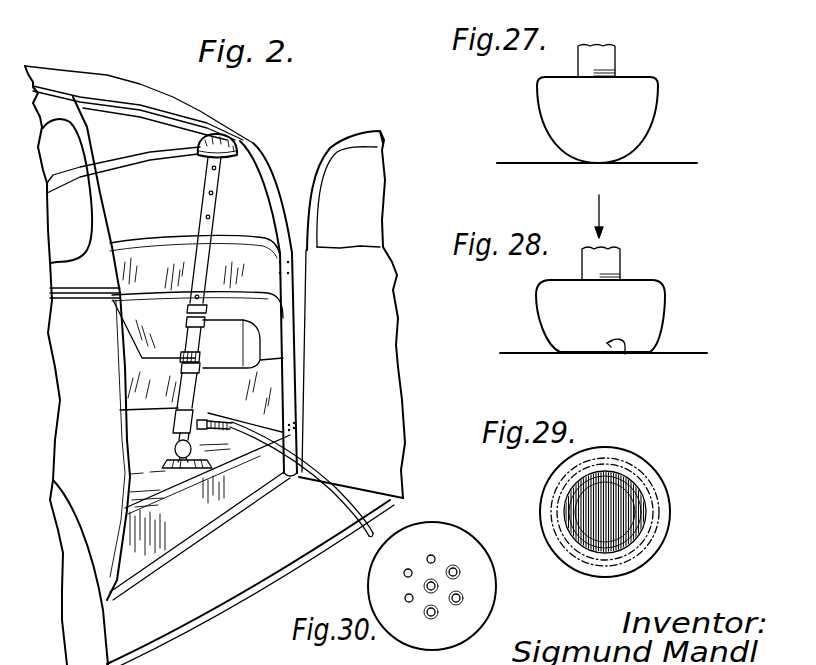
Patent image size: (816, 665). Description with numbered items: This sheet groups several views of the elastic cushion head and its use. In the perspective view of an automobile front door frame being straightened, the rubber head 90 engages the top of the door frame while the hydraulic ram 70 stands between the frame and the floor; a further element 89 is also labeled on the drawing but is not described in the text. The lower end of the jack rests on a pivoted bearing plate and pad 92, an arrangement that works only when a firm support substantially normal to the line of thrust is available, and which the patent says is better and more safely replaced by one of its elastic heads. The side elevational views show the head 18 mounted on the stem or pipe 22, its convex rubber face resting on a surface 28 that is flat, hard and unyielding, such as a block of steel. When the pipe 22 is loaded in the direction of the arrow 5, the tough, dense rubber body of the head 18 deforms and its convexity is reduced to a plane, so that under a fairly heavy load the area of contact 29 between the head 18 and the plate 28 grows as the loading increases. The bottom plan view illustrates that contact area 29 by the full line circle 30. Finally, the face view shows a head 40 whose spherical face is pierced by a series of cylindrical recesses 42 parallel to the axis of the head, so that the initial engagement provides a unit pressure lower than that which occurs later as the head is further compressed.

In FIG. 28, the arrow 5 is at (600, 211).
In FIG. 27, the head 18 is at (543, 101).
In FIG. 28, the head 18 is at (547, 303).
In FIG. 27, the stem or pipe 22 is at (607, 57).
In FIG. 28, the stem or pipe 22 is at (612, 262).
In FIG. 27, the surface 28 is at (663, 157).
In FIG. 28, the surface 28 is at (683, 347).
In FIG. 28, the area of contact 29 is at (625, 354).
In FIG. 29, the area of contact 29 is at (630, 490).
In FIG. 28, the full line circle 30 is at (557, 355).
In FIG. 29, the full line circle 30 is at (645, 524).
In FIG. 30, the head 40 is at (380, 580).
In FIG. 30, the cylindrical recesses 42 is at (434, 582).
In FIG. 2, the hydraulic ram 70 is at (196, 391).
In FIG. 2, the clamp 89 is at (232, 6).
In FIG. 2, the rubber head 90 is at (236, 140).
In FIG. 2, the pad 92 is at (165, 467).